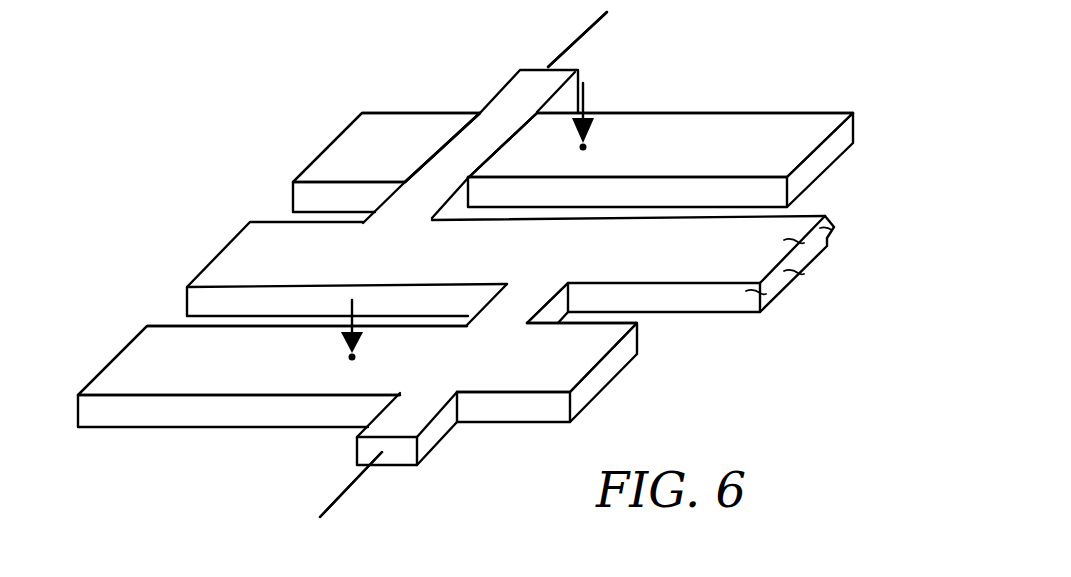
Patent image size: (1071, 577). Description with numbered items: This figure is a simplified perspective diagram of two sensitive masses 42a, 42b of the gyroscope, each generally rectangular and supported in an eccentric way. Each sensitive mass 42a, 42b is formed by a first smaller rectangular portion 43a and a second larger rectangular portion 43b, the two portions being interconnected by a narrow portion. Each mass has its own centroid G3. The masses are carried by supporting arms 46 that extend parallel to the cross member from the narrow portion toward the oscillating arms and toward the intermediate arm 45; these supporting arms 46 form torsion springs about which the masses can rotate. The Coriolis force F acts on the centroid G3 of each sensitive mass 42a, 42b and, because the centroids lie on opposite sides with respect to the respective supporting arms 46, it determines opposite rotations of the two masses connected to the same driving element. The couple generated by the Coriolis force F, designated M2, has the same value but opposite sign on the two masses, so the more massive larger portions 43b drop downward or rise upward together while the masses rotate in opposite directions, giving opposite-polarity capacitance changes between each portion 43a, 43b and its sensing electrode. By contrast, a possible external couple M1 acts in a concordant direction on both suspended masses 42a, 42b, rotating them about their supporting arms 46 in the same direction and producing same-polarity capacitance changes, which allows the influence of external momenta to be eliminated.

The sensitive mass 42a is at (322, 146).
The sensitive mass 42b is at (80, 383).
The first smaller rectangular portion 43a is at (387, 127).
The second larger rectangular portion 43b is at (765, 133).
The intermediate arm 45 is at (712, 300).
The supporting arm 46 is at (420, 200).
The Coriolis force F is at (324, 272).
The centroid G3 is at (598, 146).
The external couple M1 is at (548, 50).
The couple generated by the Coriolis force M2 is at (580, 20).